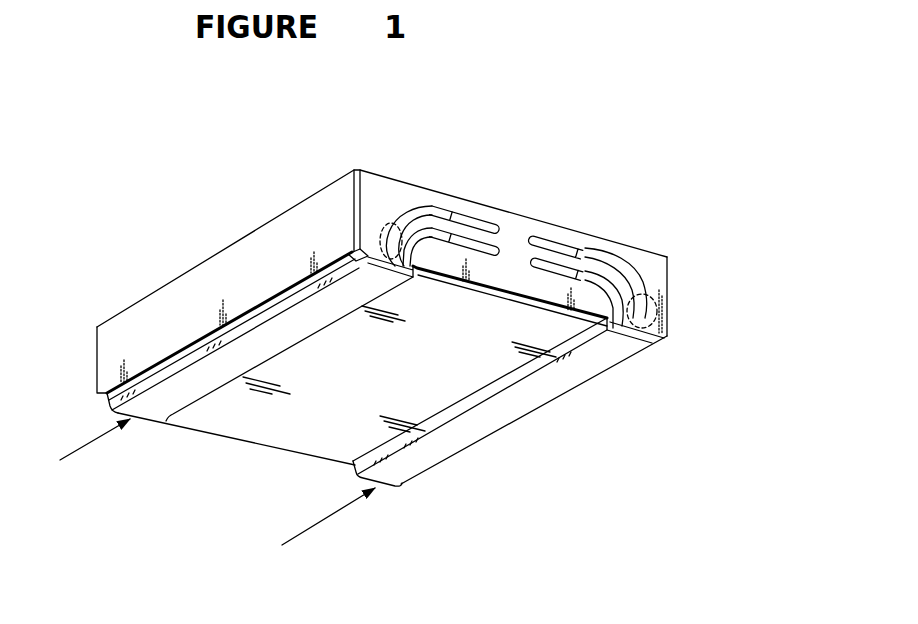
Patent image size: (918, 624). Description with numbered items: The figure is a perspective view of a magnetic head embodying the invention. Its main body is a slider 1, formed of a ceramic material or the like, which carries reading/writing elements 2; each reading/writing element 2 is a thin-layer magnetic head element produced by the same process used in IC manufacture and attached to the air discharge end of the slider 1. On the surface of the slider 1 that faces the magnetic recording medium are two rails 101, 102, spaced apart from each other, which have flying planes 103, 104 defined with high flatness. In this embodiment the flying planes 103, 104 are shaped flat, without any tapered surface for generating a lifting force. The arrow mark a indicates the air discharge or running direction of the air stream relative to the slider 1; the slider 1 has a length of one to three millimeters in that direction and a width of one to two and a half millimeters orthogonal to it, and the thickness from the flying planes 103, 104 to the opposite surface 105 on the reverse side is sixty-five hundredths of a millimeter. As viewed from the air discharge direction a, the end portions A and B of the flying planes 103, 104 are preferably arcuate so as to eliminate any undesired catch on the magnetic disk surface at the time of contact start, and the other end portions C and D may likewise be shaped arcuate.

The slider 1 is at (240, 269).
The reading/writing element 2 is at (385, 252).
The rail 101 is at (153, 372).
The rail 102 is at (475, 402).
The flying plane 103 is at (283, 321).
The flying plane 104 is at (533, 380).
The opposite surface 105 is at (497, 204).
The end portion of flying plane A is at (147, 424).
The end portion of flying plane B is at (407, 264).
The end portion of flying plane C is at (233, 383).
The end portion of flying plane D is at (215, 351).
The air discharge direction a is at (92, 443).